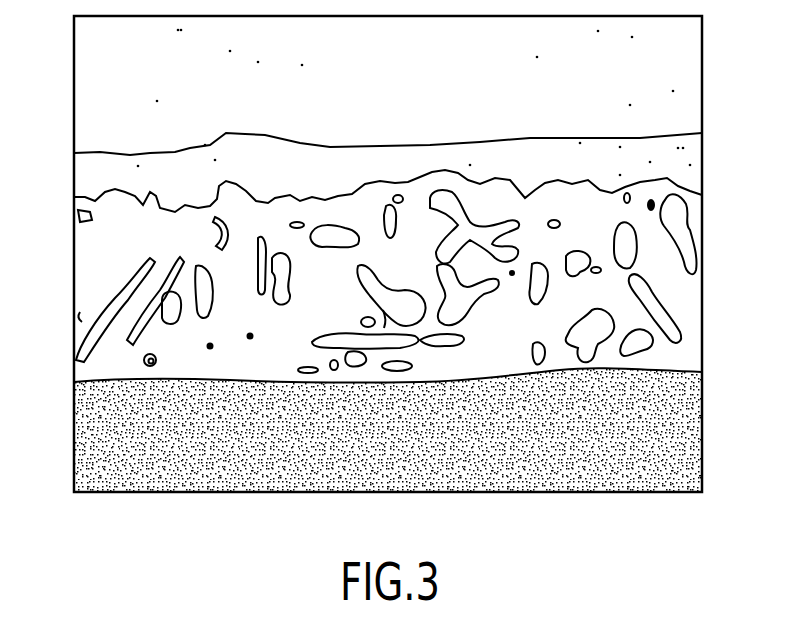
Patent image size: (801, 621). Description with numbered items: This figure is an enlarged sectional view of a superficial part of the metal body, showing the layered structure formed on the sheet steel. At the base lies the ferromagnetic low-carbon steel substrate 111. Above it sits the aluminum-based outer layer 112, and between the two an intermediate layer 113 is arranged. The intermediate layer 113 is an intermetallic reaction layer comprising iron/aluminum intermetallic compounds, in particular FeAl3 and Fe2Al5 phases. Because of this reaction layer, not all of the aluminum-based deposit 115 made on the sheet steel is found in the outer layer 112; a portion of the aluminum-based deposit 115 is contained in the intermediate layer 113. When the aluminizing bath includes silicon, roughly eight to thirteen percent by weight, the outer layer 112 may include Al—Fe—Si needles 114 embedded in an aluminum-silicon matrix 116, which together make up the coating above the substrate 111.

The ferromagnetic low-carbon steel substrate 111 is at (710, 17).
The outer layer 112 is at (710, 180).
The intermediate layer 113 is at (710, 135).
The Al—Fe—Si needles 114 is at (439, 346).
The aluminum-based deposit 115 is at (65, 167).
The aluminum-silicon matrix 116 is at (227, 358).